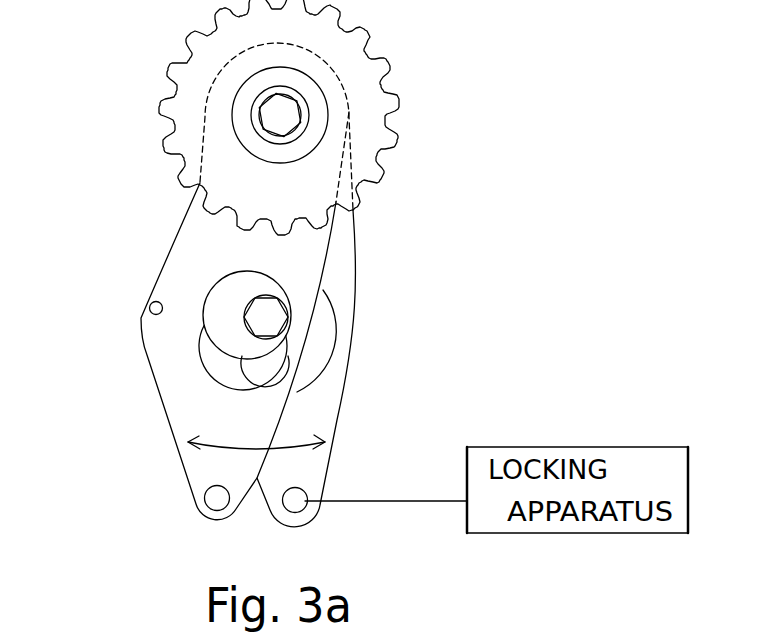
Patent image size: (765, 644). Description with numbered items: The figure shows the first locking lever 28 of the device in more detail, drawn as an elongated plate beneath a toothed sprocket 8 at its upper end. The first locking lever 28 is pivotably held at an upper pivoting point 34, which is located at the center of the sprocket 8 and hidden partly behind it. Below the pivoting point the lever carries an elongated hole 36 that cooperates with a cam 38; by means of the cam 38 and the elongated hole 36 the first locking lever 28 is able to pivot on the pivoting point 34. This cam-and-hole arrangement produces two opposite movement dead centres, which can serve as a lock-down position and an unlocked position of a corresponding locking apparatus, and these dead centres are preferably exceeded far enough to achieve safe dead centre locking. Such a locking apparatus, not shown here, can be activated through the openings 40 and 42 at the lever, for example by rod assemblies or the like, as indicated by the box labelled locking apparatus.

The sprocket 8 is at (317, 32).
The upper pivoting point 34 is at (282, 116).
The first locking lever 28 is at (295, 263).
The cam 38 is at (233, 302).
The elongated hole 36 is at (270, 366).
The opening 40 is at (149, 307).
The opening 42 is at (203, 498).